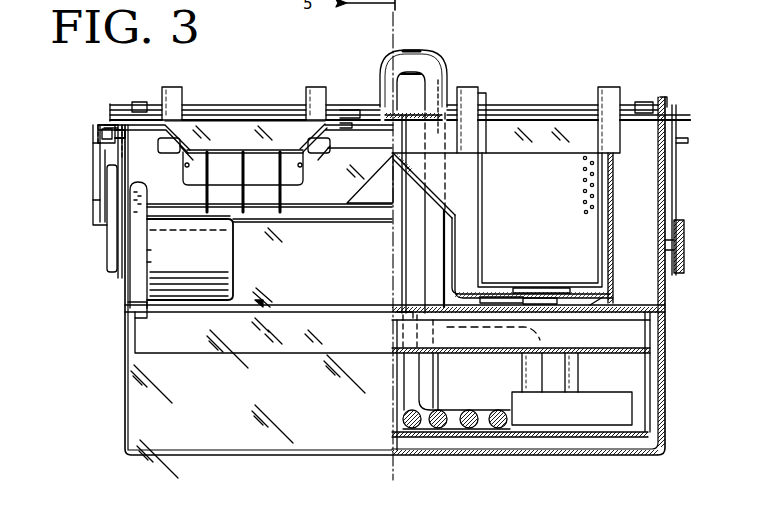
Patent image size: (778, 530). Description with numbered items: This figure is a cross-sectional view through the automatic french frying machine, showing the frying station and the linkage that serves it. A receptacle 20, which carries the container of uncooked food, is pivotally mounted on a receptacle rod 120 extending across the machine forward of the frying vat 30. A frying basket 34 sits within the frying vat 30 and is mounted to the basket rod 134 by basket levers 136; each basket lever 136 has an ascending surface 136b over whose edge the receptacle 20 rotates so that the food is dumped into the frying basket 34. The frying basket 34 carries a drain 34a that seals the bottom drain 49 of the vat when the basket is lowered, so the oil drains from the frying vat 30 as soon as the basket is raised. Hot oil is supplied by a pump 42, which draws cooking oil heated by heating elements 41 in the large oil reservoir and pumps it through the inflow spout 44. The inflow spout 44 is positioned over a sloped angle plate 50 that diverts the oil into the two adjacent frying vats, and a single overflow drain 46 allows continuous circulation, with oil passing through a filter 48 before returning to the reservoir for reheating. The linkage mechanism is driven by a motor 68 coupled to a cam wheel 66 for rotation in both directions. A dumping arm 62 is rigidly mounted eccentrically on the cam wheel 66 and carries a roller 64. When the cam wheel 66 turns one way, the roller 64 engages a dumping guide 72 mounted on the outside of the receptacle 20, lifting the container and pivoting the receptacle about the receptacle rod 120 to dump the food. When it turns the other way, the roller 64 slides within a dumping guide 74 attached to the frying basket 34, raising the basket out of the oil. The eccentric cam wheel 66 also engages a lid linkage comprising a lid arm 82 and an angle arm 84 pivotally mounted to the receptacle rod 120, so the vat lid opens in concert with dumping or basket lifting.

The receptacle 20 is at (227, 148).
The frying vat 30 is at (453, 263).
The frying basket 34 is at (550, 211).
The drain 34a is at (587, 283).
The heating elements 41 is at (467, 430).
The pump 42 is at (627, 408).
The inflow spout 44 is at (420, 53).
The overflow drain 46 is at (399, 157).
The filter 48 is at (570, 342).
The bottom drain 49 is at (262, 300).
The angle plate 50 is at (433, 200).
The dumping arm 62 is at (95, 192).
The roller 64 is at (98, 125).
The cam wheel 66 is at (110, 245).
The motor 68 is at (153, 275).
The dumping guide 72 is at (113, 125).
The dumping guide 74 is at (687, 117).
The lid arm 82 is at (677, 162).
The angle arm 84 is at (684, 248).
The receptacle rod 120 is at (132, 133).
The basket rod 134 is at (123, 151).
The basket lever 136 is at (170, 87).
The ascending surface 136b is at (481, 95).